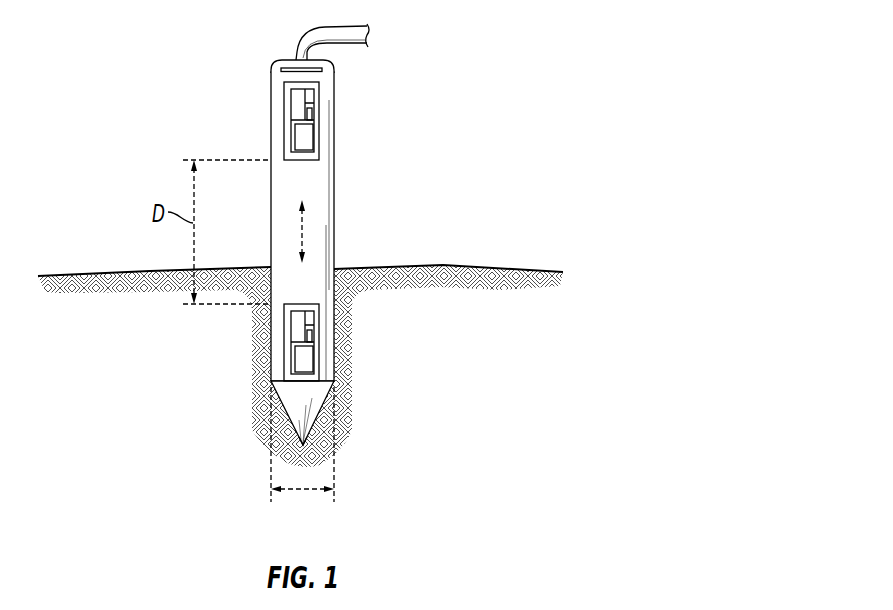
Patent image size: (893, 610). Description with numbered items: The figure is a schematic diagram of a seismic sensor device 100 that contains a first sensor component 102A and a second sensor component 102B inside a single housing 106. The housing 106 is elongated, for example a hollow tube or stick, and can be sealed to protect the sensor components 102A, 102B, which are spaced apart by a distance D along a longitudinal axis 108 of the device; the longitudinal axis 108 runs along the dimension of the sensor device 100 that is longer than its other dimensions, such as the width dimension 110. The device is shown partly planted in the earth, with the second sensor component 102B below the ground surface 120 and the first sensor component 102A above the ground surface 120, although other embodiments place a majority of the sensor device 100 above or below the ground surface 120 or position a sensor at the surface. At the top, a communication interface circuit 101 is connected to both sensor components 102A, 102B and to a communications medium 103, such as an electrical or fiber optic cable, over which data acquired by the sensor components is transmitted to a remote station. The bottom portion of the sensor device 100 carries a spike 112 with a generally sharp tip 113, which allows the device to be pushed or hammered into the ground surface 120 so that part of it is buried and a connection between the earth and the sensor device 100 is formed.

The seismic sensor device 100 is at (294, 274).
The communication interface circuit 101 is at (281, 70).
The first sensor component 102A is at (284, 122).
The second sensor component 102B is at (284, 340).
The communications medium 103 is at (336, 27).
The housing 106 is at (334, 228).
The longitudinal axis 108 is at (301, 230).
The width dimension 110 is at (297, 491).
The spike 112 is at (284, 412).
The sharp tip 113 is at (304, 447).
The ground surface 120 is at (97, 274).